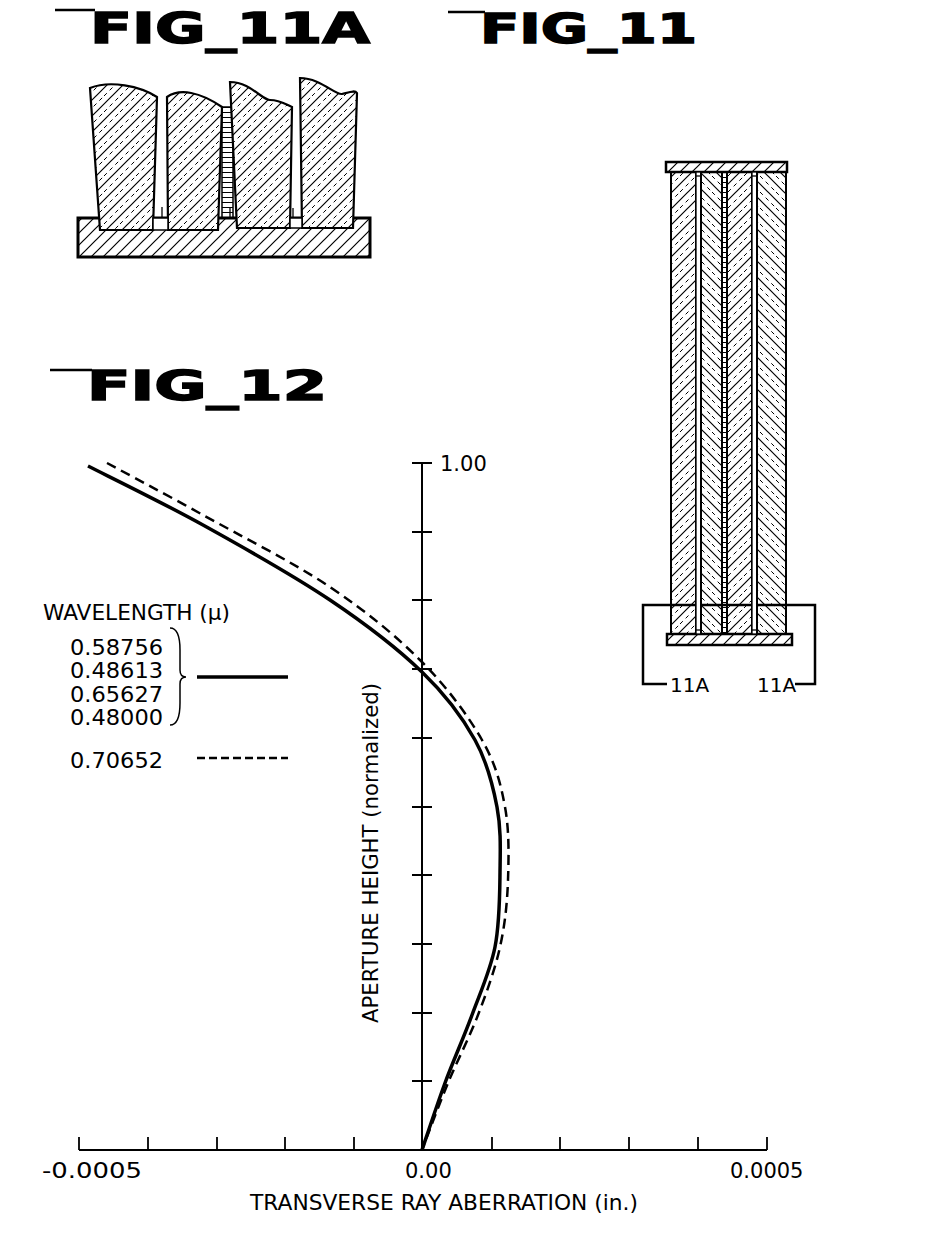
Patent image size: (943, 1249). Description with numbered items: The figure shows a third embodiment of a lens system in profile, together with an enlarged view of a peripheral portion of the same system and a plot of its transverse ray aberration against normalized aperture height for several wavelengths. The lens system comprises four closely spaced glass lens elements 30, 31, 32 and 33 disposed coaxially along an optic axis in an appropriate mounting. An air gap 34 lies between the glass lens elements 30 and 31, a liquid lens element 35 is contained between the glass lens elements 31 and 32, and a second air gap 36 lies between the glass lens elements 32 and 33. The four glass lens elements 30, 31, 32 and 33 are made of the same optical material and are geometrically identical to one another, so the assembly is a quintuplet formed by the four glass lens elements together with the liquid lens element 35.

In FIG. 11A, the glass lens element 30 is at (118, 116).
In FIG. 11, the glass lens element 30 is at (687, 190).
In FIG. 11A, the glass lens element 31 is at (185, 137).
In FIG. 11, the glass lens element 31 is at (713, 245).
In FIG. 11A, the glass lens element 32 is at (270, 142).
In FIG. 11, the glass lens element 32 is at (733, 245).
In FIG. 11A, the glass lens element 33 is at (333, 173).
In FIG. 11, the glass lens element 33 is at (768, 267).
In FIG. 11A, the air gap 34 is at (162, 208).
In FIG. 11, the air gap 34 is at (697, 163).
In FIG. 11A, the liquid lens element 35 is at (230, 214).
In FIG. 11, the liquid lens element 35 is at (723, 163).
In FIG. 11A, the air gap 36 is at (293, 209).
In FIG. 11, the air gap 36 is at (757, 163).